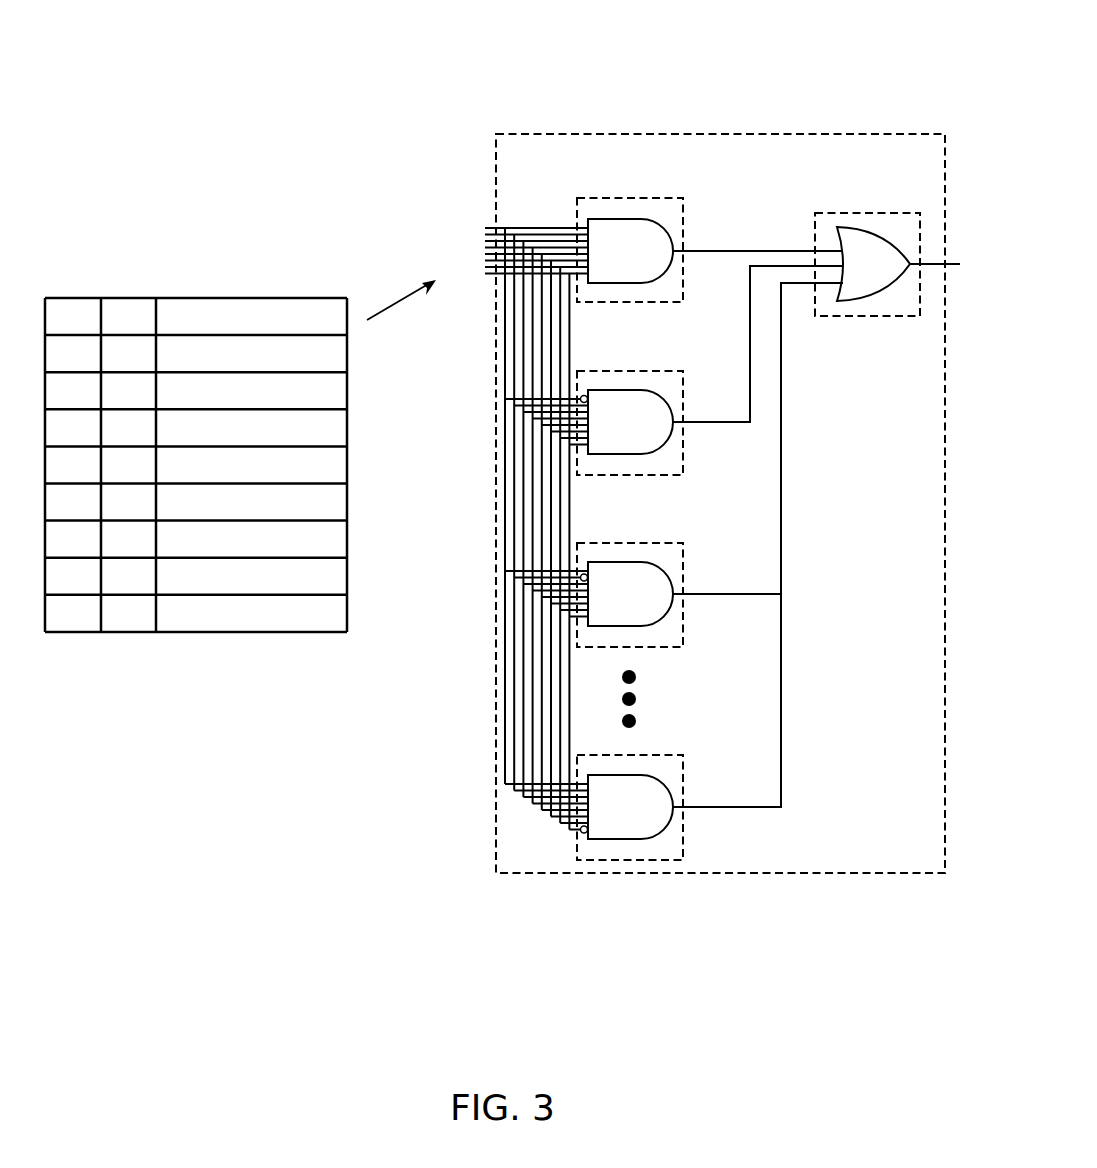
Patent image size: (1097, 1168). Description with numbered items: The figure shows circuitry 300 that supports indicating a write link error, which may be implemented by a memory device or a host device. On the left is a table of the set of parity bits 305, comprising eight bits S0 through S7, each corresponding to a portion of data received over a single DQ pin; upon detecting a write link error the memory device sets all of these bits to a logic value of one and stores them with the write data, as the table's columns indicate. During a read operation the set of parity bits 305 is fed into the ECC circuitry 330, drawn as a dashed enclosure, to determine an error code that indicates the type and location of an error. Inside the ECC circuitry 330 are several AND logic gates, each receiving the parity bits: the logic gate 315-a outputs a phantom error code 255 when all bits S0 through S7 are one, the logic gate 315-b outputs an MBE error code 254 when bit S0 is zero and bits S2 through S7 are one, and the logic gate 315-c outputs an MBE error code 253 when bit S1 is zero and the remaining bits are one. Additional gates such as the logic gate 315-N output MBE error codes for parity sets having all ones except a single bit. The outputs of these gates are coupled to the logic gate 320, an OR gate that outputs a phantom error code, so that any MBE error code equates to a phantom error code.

The circuitry 300 is at (749, 1021).
The set of parity bits 305 is at (125, 298).
The ECC circuitry 330 is at (643, 134).
The logic gate 315-a is at (632, 198).
The logic gate 315-b is at (633, 371).
The logic gate 315-c is at (633, 543).
The logic gate 315-N is at (660, 755).
The logic gate 320 is at (872, 213).
The error code 255 is at (630, 251).
The error code 254 is at (630, 422).
The error code 253 is at (630, 594).